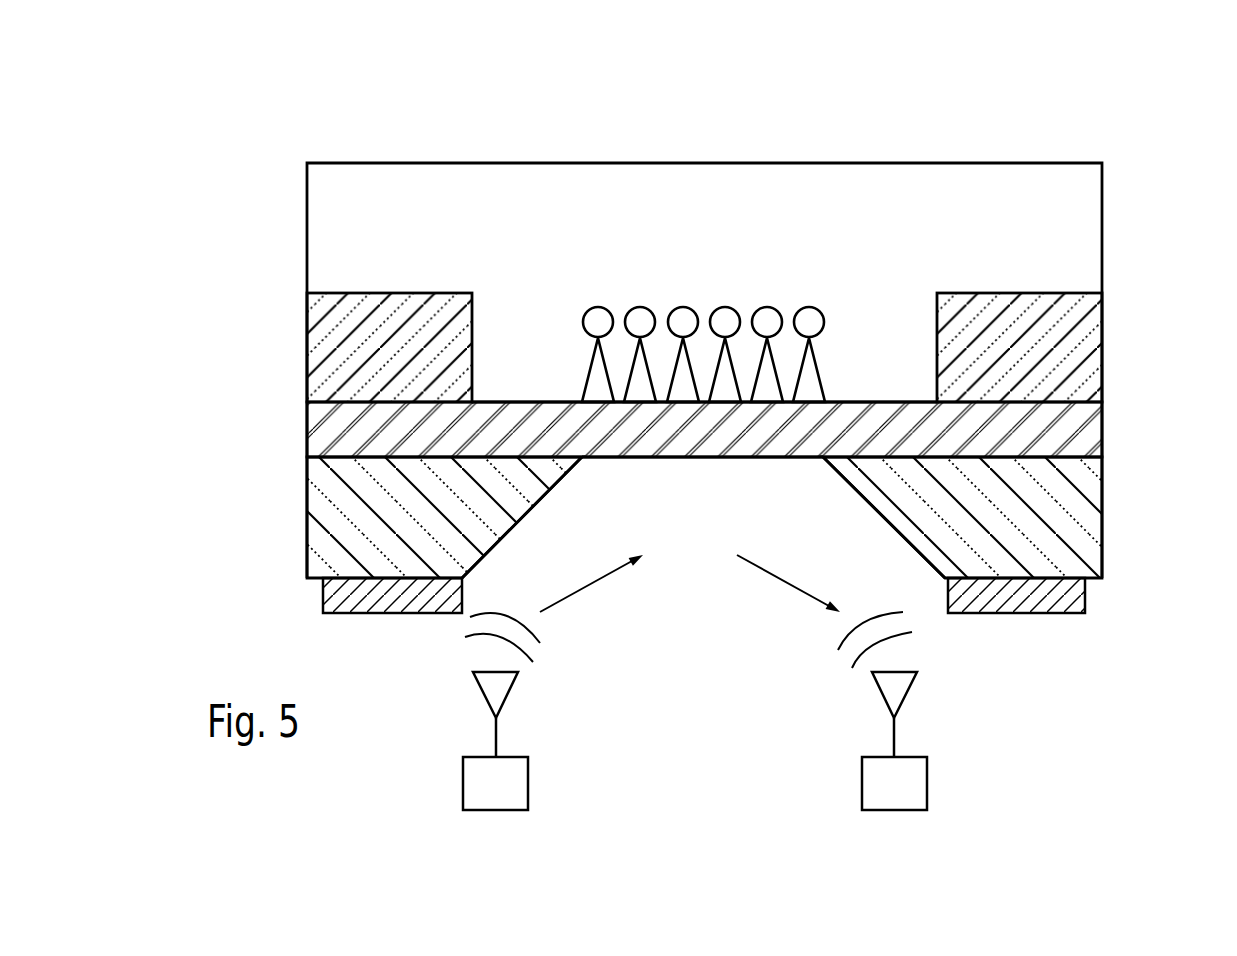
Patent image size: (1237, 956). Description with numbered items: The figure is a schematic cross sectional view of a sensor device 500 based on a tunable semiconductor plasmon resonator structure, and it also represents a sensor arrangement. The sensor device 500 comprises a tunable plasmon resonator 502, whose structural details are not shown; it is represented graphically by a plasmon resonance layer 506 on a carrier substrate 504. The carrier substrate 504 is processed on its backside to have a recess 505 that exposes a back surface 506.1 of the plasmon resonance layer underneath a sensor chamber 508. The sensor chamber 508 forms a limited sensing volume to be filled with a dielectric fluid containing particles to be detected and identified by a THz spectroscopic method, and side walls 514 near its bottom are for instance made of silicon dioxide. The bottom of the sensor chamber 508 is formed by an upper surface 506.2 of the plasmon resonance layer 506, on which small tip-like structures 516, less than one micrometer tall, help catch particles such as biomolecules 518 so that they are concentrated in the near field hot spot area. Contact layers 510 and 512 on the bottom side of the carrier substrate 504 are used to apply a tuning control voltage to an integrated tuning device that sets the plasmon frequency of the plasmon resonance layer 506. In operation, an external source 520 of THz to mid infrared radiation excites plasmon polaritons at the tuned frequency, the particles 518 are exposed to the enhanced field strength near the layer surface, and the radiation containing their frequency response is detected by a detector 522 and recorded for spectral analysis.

The sensor device 500 is at (356, 122).
The tunable plasmon resonator 502 is at (769, 488).
The carrier substrate 504 is at (1096, 522).
The recess 505 is at (561, 511).
The plasmon resonance layer 506 is at (745, 432).
The back surface of the plasmon resonance layer 506.1 is at (695, 457).
The upper surface of the plasmon resonance layer 506.2 is at (515, 402).
The sensor chamber 508 is at (708, 251).
The contact layer 510 is at (1030, 608).
The contact layer 512 is at (370, 608).
The side walls 514 is at (1096, 330).
The tip-like structures 516 is at (818, 379).
The biomolecules 518 is at (812, 306).
The external source of electromagnetic radiation 520 is at (517, 783).
The detector 522 is at (917, 783).